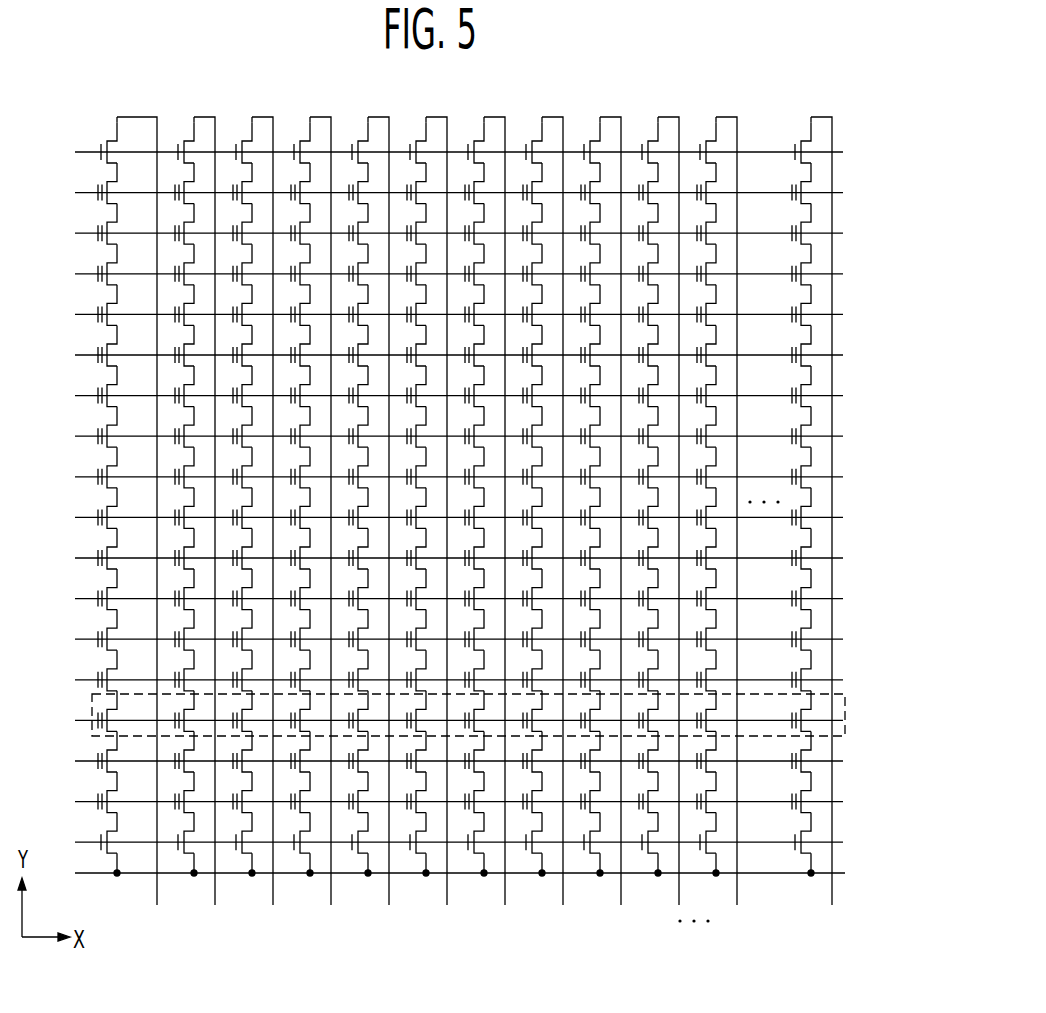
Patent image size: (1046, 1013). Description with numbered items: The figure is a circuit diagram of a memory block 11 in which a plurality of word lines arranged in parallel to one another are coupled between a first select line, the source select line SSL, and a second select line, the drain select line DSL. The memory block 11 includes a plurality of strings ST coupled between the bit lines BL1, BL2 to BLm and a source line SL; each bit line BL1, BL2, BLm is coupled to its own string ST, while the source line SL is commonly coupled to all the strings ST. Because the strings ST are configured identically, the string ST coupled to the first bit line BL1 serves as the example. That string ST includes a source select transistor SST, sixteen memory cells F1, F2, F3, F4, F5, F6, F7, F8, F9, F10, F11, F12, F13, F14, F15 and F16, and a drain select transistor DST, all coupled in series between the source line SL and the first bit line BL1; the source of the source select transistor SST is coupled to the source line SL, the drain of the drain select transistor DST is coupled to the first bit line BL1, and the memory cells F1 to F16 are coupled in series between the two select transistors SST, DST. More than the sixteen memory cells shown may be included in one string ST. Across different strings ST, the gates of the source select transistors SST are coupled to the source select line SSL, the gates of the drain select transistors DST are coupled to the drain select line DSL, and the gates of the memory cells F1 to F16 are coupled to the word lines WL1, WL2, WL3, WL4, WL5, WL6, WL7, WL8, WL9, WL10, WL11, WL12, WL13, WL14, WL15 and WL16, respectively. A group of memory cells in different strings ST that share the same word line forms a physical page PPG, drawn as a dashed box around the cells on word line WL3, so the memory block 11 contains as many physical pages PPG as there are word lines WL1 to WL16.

The memory block 11 is at (742, 92).
The string ST is at (146, 113).
The physical page PPG is at (848, 712).
The drain select transistor DST is at (126, 142).
The source select transistor SST is at (126, 833).
The drain select line DSL is at (440, 153).
The source select line SSL is at (441, 843).
The source line SL is at (448, 875).
The first bit line BL1 is at (143, 526).
The second bit line BL2 is at (203, 526).
The m-th bit line BLm is at (822, 526).
The word line WL1 is at (440, 803).
The word line WL2 is at (440, 762).
The word line WL3 is at (440, 721).
The word line WL4 is at (440, 681).
The word line WL5 is at (440, 640).
The word line WL6 is at (440, 600).
The word line WL7 is at (440, 559).
The word line WL8 is at (440, 518).
The word line WL9 is at (440, 478).
The word line WL10 is at (437, 437).
The word line WL11 is at (437, 397).
The word line WL12 is at (437, 356).
The word line WL13 is at (437, 315).
The word line WL14 is at (437, 275).
The word line WL15 is at (437, 234).
The word line WL16 is at (437, 194).
The memory cell F1 is at (120, 792).
The memory cell F2 is at (120, 751).
The memory cell F3 is at (120, 711).
The memory cell F4 is at (120, 670).
The memory cell F5 is at (120, 630).
The memory cell F6 is at (120, 589).
The memory cell F7 is at (120, 548).
The memory cell F8 is at (120, 508).
The memory cell F9 is at (120, 467).
The memory cell F10 is at (125, 427).
The memory cell F11 is at (125, 386).
The memory cell F12 is at (125, 345).
The memory cell F13 is at (125, 305).
The memory cell F14 is at (125, 264).
The memory cell F15 is at (125, 224).
The memory cell F16 is at (125, 183).